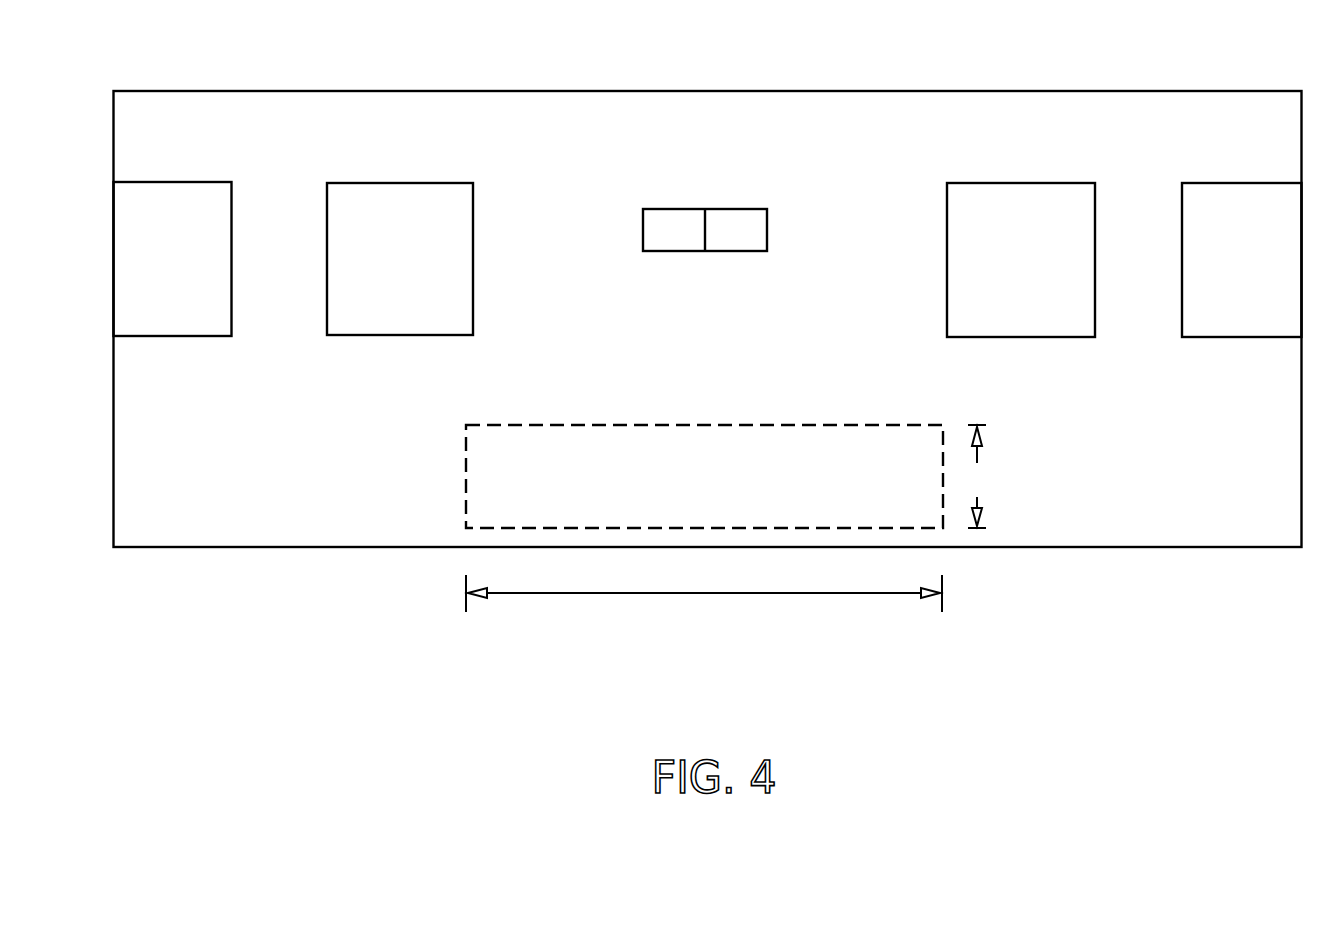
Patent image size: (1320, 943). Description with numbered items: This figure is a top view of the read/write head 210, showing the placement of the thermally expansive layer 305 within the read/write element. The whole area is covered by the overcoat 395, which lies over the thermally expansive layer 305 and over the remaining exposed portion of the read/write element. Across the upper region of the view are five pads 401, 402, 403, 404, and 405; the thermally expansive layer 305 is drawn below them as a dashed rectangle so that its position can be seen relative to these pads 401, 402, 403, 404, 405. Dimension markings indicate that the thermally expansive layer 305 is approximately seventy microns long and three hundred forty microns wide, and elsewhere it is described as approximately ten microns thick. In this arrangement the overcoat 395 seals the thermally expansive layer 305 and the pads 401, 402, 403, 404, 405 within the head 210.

The print head structure 210 is at (730, 40).
The overcoat 395 is at (778, 136).
The pad 401 is at (137, 272).
The pad 402 is at (383, 272).
The pad 403 is at (743, 209).
The pad 404 is at (1038, 272).
The pad 405 is at (1263, 272).
The thermally expansive layer 305 is at (687, 502).